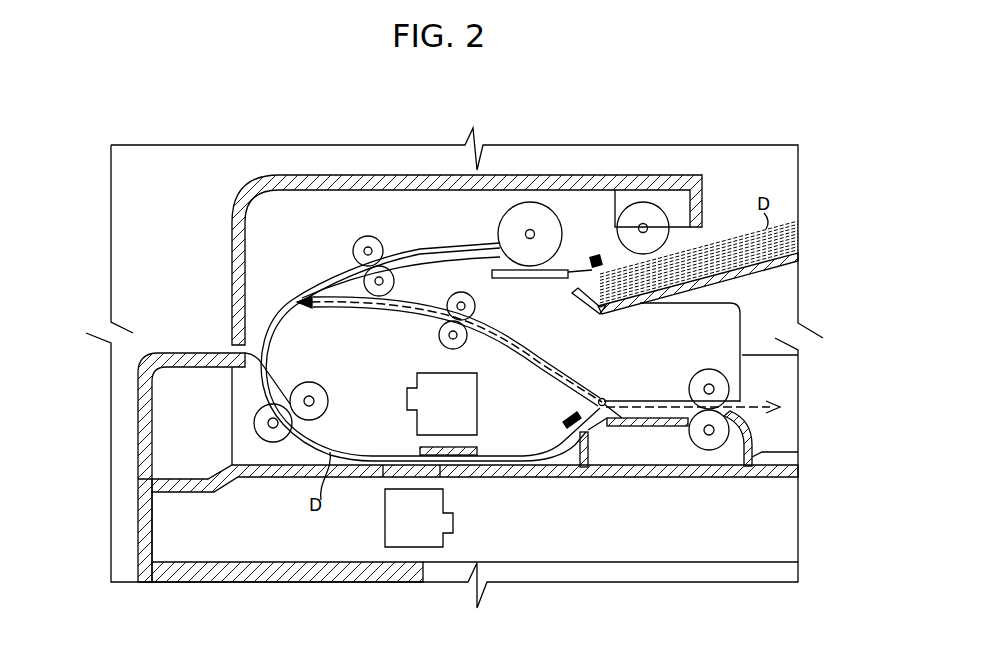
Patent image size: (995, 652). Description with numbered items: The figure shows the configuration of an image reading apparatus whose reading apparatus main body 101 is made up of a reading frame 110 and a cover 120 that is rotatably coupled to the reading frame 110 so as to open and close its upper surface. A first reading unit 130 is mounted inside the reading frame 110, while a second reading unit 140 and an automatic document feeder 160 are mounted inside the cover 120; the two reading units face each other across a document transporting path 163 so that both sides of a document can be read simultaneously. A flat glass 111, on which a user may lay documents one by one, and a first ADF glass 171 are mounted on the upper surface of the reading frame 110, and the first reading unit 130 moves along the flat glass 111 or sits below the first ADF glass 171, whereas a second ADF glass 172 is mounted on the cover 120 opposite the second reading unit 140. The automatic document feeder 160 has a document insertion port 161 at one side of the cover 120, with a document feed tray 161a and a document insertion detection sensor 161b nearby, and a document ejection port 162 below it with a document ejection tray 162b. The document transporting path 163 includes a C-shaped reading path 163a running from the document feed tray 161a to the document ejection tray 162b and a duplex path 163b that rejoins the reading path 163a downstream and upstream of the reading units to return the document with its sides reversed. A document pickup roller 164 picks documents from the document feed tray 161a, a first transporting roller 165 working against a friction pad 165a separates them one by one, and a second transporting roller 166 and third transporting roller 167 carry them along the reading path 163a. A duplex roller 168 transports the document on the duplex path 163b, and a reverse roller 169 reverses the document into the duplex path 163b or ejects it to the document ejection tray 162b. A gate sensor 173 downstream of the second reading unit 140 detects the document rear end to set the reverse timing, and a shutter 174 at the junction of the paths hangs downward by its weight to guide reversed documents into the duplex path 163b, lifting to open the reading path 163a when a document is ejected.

The reading apparatus main body 101 is at (60, 432).
The reading frame 110 is at (138, 530).
The flat glass 111 is at (660, 478).
The cover 120 is at (138, 433).
The first reading unit 130 is at (440, 504).
The second reading unit 140 is at (470, 381).
The automatic document feeder 160 is at (548, 186).
The document insertion port 161 is at (695, 235).
The document feed tray 161a is at (757, 268).
The document insertion detection sensor 161b is at (593, 256).
The document ejection port 162 is at (732, 415).
The document ejection tray 162b is at (783, 455).
The document transporting path 163 is at (392, 358).
The reading path 163a is at (274, 378).
The duplex path 163b is at (398, 313).
The document pickup roller 164 is at (647, 205).
The first transporting roller 165 is at (517, 212).
The friction pad 165a is at (547, 279).
The second transporting roller 166 is at (357, 245).
The third transporting roller 167 is at (273, 442).
The duplex roller 168 is at (473, 303).
The reverse roller 169 is at (709, 369).
The first ADF glass 171 is at (400, 478).
The second ADF glass 172 is at (477, 447).
The gate sensor 173 is at (570, 420).
The shutter 174 is at (606, 398).